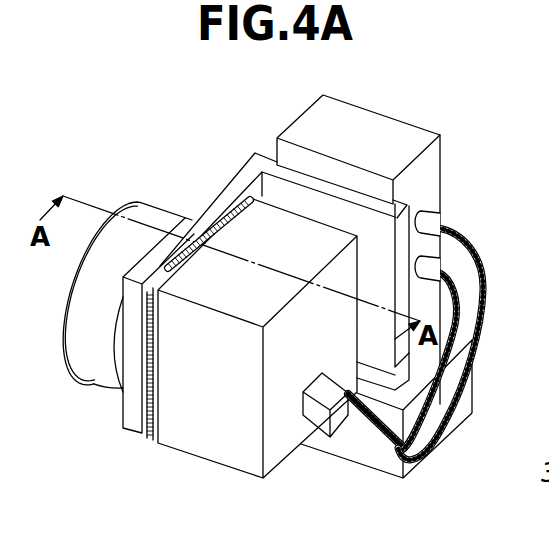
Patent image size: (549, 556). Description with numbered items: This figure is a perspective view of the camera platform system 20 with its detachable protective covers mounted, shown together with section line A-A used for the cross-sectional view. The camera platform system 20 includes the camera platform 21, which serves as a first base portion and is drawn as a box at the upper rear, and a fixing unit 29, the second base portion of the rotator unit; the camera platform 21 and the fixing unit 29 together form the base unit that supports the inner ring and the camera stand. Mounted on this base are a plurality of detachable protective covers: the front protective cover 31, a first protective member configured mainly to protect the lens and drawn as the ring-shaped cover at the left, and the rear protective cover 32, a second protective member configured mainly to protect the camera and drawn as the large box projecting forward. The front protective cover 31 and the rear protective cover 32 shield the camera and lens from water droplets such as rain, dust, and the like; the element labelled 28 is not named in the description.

The camera platform system 20 is at (224, 126).
The camera platform 21 is at (383, 128).
The plate member 28 is at (143, 380).
The fixing unit 29 is at (212, 202).
The front protective cover 31 is at (137, 212).
The rear protective cover 32 is at (195, 448).